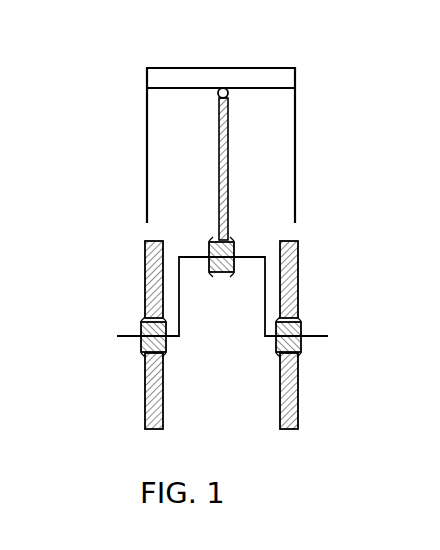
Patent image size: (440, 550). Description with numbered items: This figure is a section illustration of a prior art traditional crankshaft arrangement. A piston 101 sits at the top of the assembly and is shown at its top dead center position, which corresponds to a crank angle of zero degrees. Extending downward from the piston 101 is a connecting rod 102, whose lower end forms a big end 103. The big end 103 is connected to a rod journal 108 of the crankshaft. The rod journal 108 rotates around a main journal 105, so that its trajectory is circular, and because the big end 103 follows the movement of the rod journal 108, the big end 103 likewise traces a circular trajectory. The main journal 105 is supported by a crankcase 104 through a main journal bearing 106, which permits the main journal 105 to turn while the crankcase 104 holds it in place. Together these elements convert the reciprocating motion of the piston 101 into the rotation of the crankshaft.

The piston 101 is at (244, 82).
The connecting rod 102 is at (208, 162).
The big end 103 is at (210, 233).
The crankcase 104 is at (290, 383).
The main journal 105 is at (312, 336).
The main journal bearing 106 is at (310, 311).
The rod journal 108 is at (260, 247).